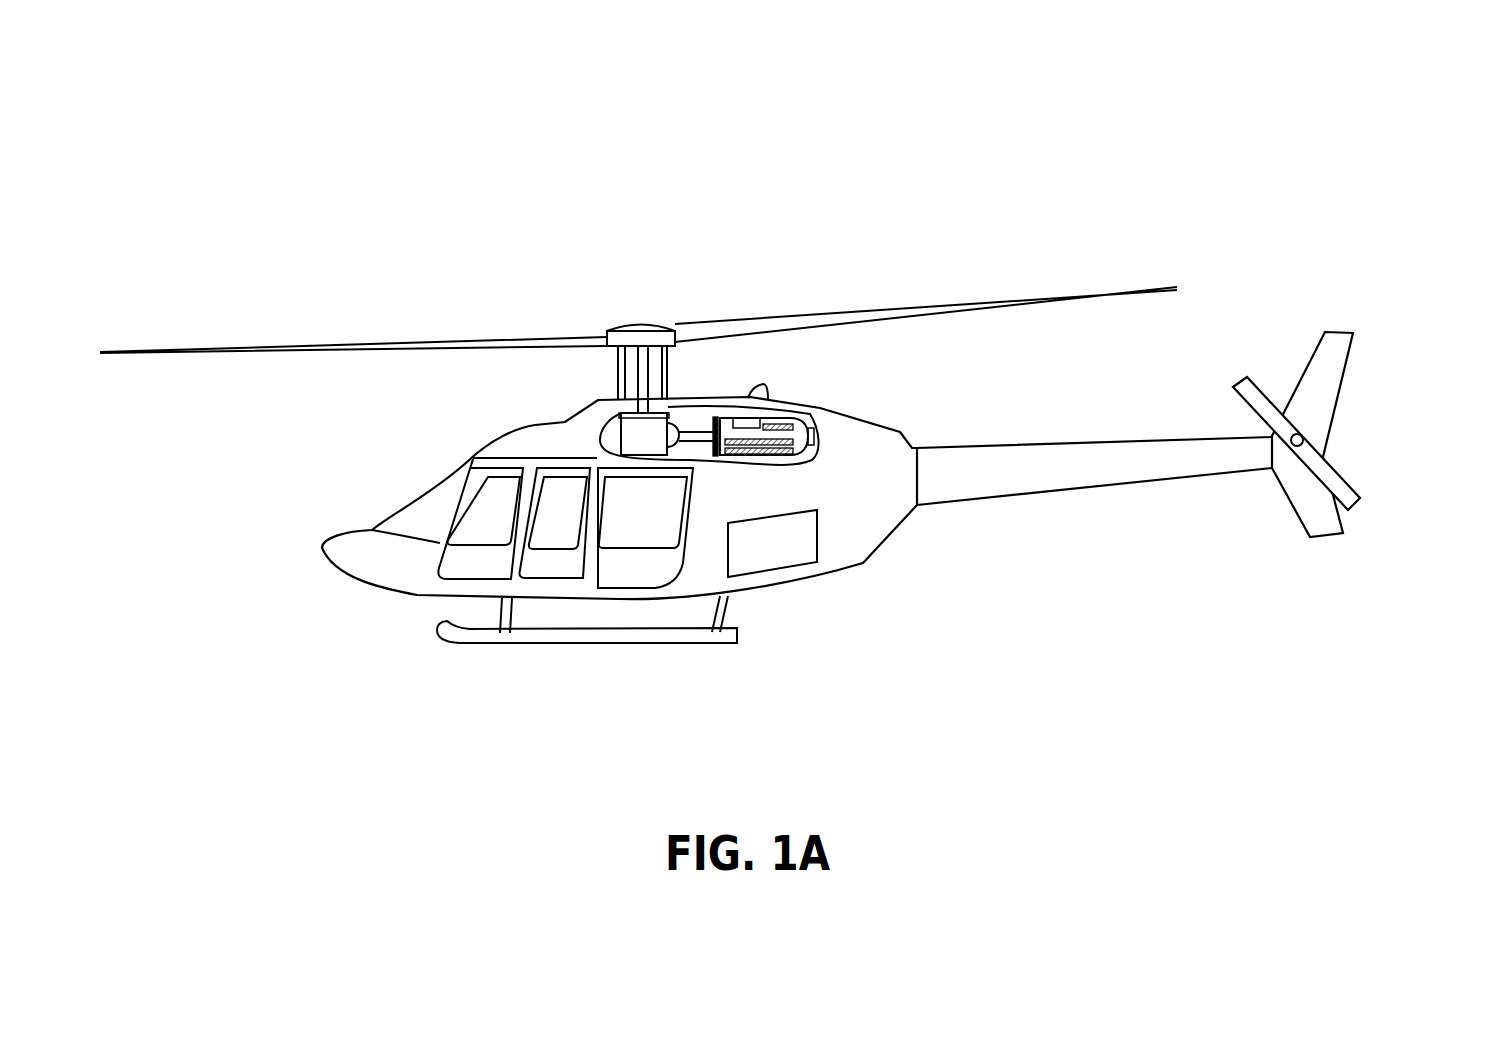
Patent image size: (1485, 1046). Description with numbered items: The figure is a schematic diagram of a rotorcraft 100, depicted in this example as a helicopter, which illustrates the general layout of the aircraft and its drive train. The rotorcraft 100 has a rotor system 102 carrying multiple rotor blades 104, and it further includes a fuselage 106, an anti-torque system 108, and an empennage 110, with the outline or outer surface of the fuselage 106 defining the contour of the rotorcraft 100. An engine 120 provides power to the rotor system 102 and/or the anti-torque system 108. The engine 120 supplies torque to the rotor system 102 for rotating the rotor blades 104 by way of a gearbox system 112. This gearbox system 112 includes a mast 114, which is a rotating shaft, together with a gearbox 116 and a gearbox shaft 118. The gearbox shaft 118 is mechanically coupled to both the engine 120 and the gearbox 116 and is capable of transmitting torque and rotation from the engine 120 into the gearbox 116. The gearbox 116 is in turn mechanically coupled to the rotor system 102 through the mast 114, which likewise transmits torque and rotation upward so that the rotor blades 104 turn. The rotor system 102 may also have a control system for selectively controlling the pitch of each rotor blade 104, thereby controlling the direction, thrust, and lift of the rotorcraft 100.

The rotorcraft 100 is at (204, 122).
The rotor system 102 is at (659, 285).
The rotor blades 104 is at (1077, 298).
The fuselage 106 is at (417, 593).
The anti-torque system 108 is at (1376, 520).
The empennage 110 is at (1053, 493).
The gearbox system 112 is at (600, 372).
The mast 114 is at (627, 410).
The gearbox 116 is at (622, 432).
The gearbox shaft 118 is at (695, 438).
The engine 120 is at (790, 423).